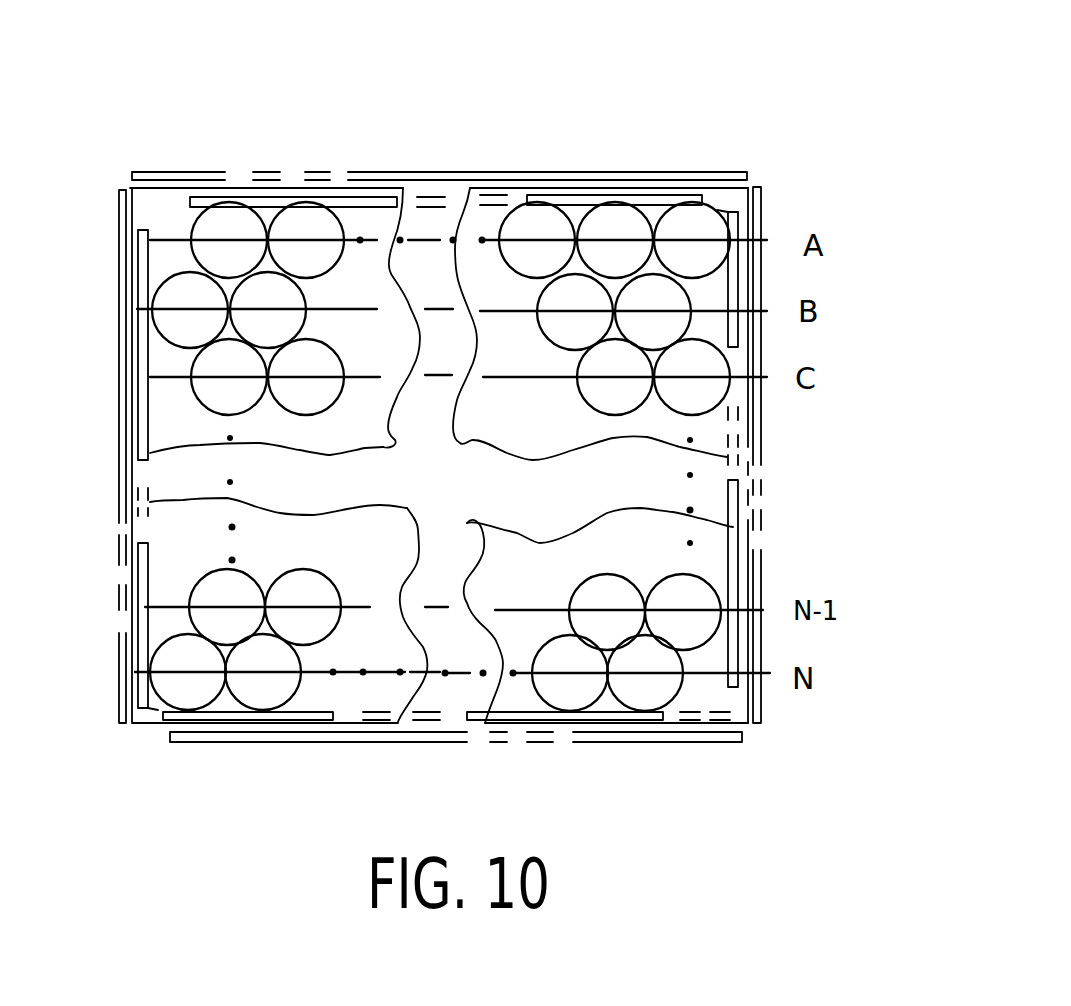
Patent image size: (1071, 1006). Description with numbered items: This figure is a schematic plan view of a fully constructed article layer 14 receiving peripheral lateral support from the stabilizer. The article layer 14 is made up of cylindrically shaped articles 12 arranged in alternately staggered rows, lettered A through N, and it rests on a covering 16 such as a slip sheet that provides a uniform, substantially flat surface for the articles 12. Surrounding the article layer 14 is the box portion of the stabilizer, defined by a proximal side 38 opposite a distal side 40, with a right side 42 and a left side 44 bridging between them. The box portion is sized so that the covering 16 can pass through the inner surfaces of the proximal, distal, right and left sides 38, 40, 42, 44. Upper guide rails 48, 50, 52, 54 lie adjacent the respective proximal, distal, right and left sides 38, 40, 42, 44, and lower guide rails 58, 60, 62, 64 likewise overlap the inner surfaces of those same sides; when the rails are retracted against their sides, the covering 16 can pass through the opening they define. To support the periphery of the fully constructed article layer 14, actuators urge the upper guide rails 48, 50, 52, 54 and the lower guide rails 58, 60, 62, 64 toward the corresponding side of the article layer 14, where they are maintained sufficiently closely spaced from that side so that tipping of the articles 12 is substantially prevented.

The article 12 is at (717, 210).
The article layer 14 is at (784, 93).
The covering 16 is at (657, 188).
The proximal side 38 is at (627, 173).
The distal side 40 is at (630, 743).
The right side 42 is at (760, 707).
The left side 44 is at (117, 688).
The upper guide rail 48 is at (428, 192).
The upper guide rail 50 is at (430, 722).
The upper guide rail 52 is at (738, 423).
The upper guide rail 54 is at (122, 408).
The lower guide rail 58 is at (350, 197).
The lower guide rail 60 is at (470, 720).
The lower guide rail 62 is at (737, 497).
The lower guide rail 64 is at (128, 497).